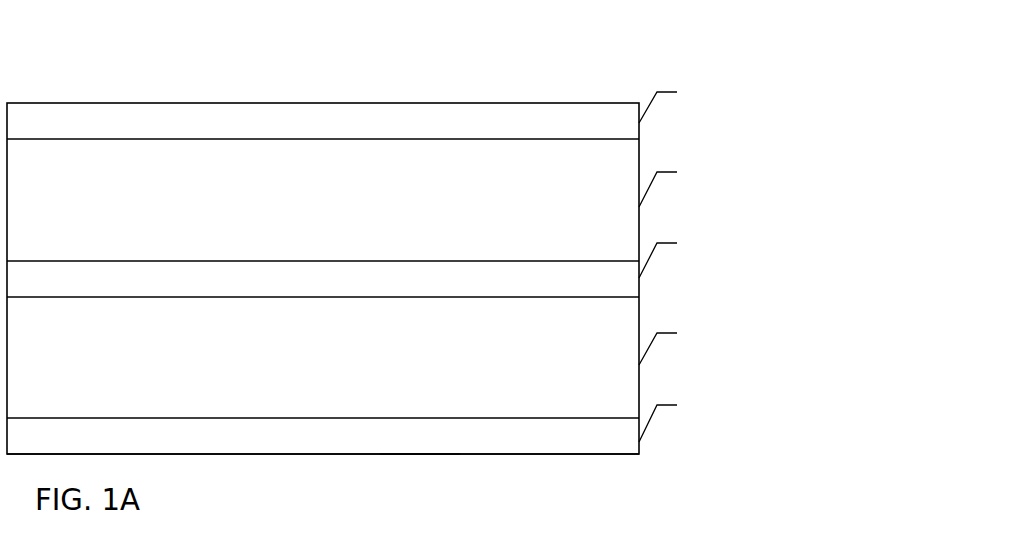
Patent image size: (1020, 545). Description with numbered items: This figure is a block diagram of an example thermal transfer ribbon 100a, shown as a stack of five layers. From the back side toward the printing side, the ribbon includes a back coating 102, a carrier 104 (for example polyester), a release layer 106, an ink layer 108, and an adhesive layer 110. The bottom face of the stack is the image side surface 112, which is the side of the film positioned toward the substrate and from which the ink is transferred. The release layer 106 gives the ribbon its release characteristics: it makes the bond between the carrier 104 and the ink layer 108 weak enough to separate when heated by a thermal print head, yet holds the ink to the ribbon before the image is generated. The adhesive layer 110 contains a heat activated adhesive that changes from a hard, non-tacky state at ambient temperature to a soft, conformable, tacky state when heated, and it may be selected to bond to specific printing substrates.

The thermal transfer ribbon 100a is at (173, 47).
The back coating 102 is at (597, 130).
The carrier 104 is at (597, 223).
The release layer 106 is at (597, 288).
The ink layer 108 is at (597, 370).
The adhesive layer 110 is at (597, 448).
The image side surface 112 is at (416, 456).